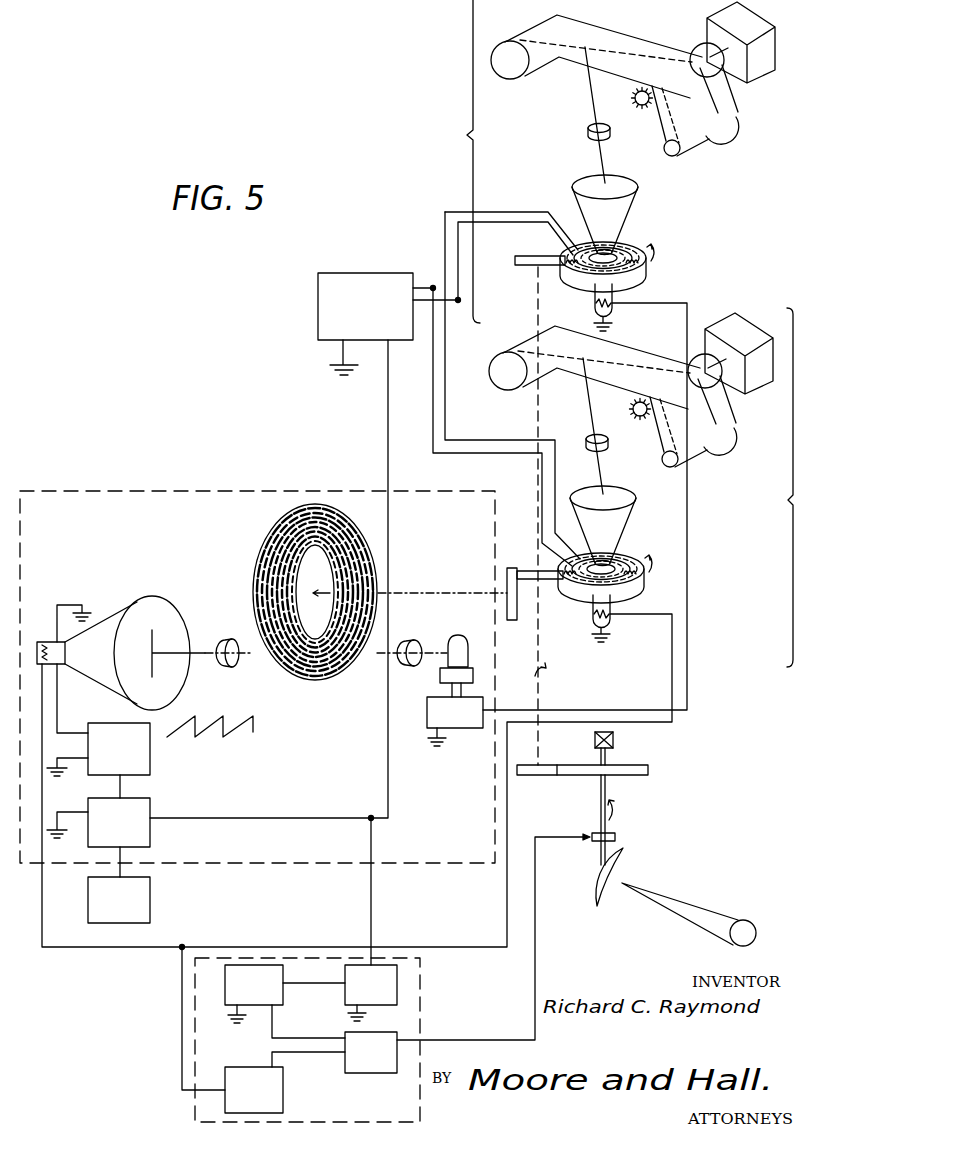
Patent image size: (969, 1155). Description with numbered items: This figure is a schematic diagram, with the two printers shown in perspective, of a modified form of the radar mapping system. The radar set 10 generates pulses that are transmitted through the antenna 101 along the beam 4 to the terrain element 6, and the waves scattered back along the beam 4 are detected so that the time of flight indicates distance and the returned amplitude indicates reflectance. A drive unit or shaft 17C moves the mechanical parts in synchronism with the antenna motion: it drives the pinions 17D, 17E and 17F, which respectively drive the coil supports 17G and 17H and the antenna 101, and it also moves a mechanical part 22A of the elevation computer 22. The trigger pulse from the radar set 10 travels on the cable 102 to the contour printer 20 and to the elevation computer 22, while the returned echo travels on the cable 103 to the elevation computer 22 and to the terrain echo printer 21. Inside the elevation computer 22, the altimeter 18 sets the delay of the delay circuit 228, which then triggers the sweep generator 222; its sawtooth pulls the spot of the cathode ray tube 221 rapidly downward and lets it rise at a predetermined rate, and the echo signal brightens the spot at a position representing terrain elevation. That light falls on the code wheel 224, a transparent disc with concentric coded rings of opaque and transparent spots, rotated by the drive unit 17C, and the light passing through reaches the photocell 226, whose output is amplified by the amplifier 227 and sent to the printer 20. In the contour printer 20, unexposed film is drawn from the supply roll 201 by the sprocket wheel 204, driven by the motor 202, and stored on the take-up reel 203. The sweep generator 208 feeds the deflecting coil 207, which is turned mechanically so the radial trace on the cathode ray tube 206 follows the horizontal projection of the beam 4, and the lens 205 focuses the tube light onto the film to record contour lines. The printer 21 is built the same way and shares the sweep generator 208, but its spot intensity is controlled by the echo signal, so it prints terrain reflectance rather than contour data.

The beam 4 is at (697, 905).
The terrain element 6 is at (757, 937).
The radar set 10 is at (412, 1018).
The altimeter 18 is at (150, 887).
The contour printer 20 is at (415, 161).
The terrain echo printer 21 is at (641, 487).
The elevation computer 22 is at (65, 513).
The mechanical part 22A is at (441, 593).
The antenna 101 is at (607, 868).
The cable 102 is at (373, 921).
The cable 103 is at (182, 1012).
The drive unit 17C is at (539, 691).
The pinion 17D is at (531, 558).
The pinion 17E is at (532, 258).
The pinion 17F is at (550, 776).
The coil support 17G is at (634, 585).
The coil support 17H is at (640, 266).
The supply roll 201 is at (520, 72).
The motor 202 is at (760, 79).
The take-up reel 203 is at (690, 144).
The sprocket wheel 204 is at (643, 107).
The lens 205 is at (589, 131).
The cathode ray tube 206 is at (630, 208).
The deflecting coil 207 is at (587, 270).
The sweep generator 208 is at (388, 260).
The cathode ray tube 221 is at (148, 600).
The sweep generator 222 is at (150, 750).
The code wheel 224 is at (272, 543).
The photocell 226 is at (469, 621).
The amplifier 227 is at (427, 710).
The delay circuit 228 is at (150, 805).